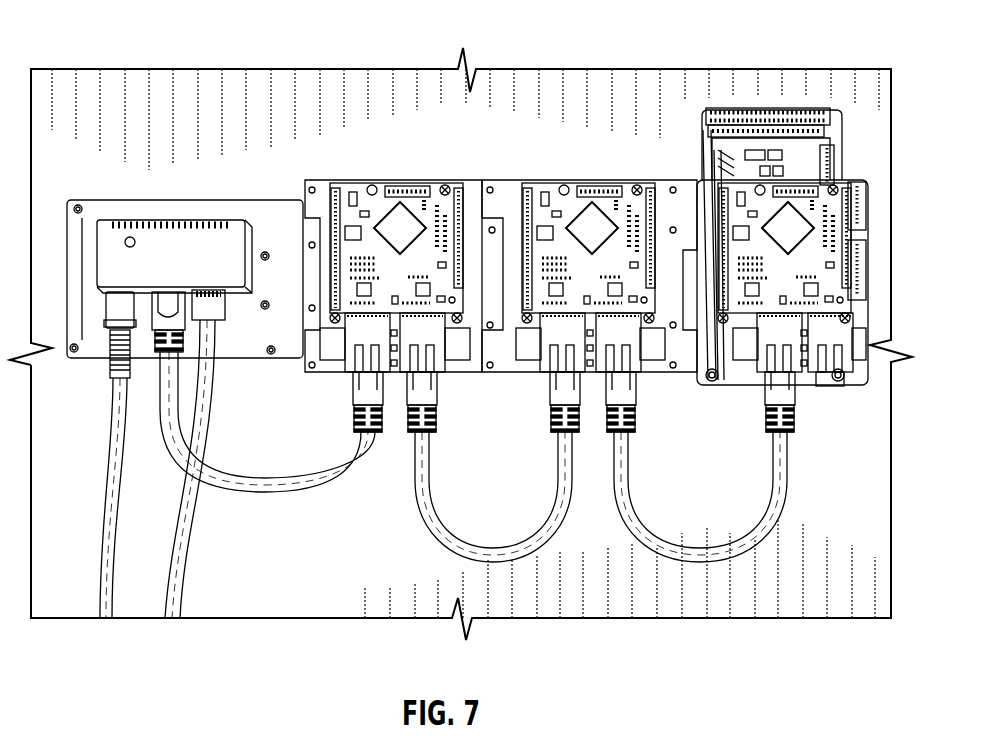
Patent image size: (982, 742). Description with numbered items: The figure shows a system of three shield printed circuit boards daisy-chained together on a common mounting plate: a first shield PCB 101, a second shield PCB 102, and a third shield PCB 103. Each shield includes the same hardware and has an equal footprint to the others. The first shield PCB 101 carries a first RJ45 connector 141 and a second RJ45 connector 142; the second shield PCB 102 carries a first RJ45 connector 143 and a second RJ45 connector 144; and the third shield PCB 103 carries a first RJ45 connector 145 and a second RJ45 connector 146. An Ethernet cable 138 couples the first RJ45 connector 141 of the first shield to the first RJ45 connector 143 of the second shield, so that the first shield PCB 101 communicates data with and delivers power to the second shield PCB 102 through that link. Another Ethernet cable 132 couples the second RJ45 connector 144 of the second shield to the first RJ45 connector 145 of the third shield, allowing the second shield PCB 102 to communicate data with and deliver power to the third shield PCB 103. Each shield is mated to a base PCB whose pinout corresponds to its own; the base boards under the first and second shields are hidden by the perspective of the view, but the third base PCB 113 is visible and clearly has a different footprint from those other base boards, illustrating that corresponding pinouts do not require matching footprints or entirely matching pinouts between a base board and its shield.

The first shield PCB 101 is at (400, 215).
The second shield PCB 102 is at (592, 215).
The third shield PCB 103 is at (788, 222).
The third base PCB 113 is at (718, 113).
The Ethernet cable 132 is at (666, 561).
The Ethernet cable 138 is at (466, 553).
The first RJ45 connector 141 is at (416, 378).
The second RJ45 connector 142 is at (362, 378).
The first RJ45 connector 143 is at (556, 378).
The second RJ45 connector 144 is at (614, 378).
The first RJ45 connector 145 is at (770, 378).
The second RJ45 connector 146 is at (832, 380).